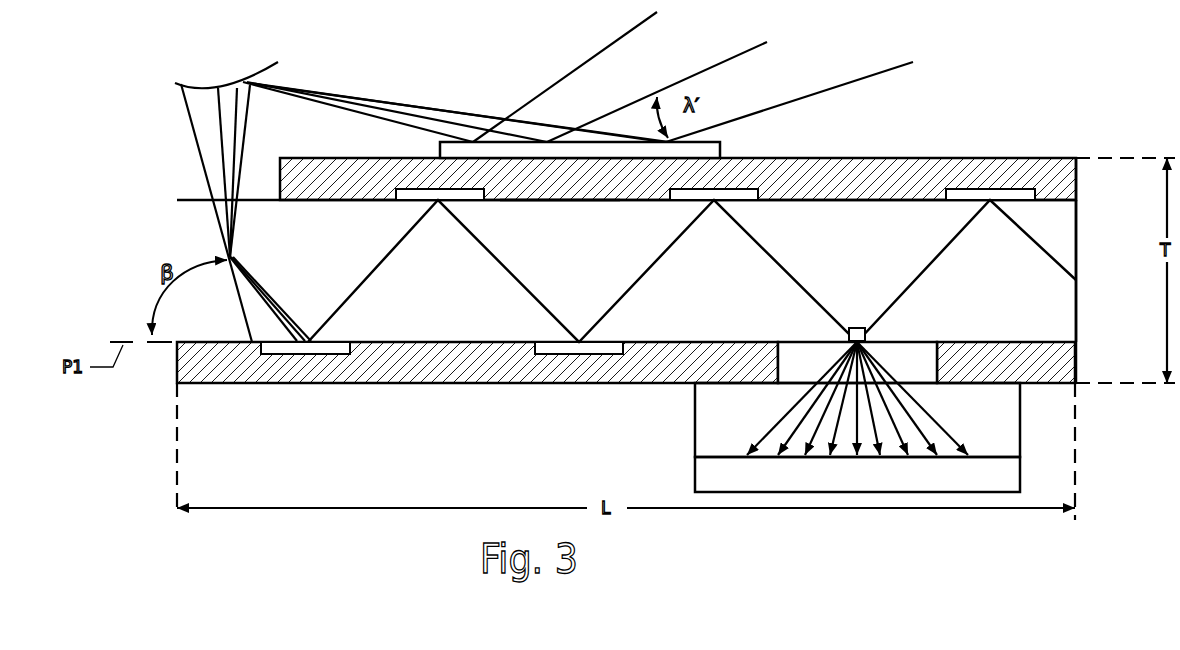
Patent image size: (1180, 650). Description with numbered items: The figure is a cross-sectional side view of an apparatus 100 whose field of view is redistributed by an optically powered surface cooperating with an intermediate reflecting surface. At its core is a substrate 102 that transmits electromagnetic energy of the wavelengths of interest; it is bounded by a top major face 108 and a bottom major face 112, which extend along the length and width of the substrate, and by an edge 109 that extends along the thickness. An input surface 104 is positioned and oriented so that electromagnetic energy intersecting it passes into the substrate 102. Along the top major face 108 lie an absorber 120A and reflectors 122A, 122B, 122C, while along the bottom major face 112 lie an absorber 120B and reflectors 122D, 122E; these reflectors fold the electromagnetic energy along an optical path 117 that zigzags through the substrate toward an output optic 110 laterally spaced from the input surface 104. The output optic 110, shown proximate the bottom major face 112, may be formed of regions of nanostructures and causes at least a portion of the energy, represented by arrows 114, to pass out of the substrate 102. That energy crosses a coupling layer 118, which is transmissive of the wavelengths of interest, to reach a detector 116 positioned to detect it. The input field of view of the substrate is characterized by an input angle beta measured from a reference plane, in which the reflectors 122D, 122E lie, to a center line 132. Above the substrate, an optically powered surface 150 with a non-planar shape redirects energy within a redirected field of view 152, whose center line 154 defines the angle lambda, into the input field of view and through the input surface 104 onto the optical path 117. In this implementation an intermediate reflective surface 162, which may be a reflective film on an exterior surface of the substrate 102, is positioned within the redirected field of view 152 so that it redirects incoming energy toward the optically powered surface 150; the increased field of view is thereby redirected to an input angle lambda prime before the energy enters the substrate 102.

The apparatus 100 is at (977, 98).
The substrate 102 is at (1052, 234).
The input surface 104 is at (270, 201).
The top major face 108 is at (555, 201).
The edge 109 is at (1078, 314).
The output optic 110 is at (857, 328).
The bottom major face 112 is at (992, 342).
The arrows 114 is at (942, 420).
The detector 116 is at (695, 474).
The optical path 117 is at (377, 272).
The coupling layer 118 is at (695, 419).
The absorber 120A is at (895, 158).
The absorber 120B is at (245, 384).
The reflector 122A is at (437, 190).
The reflector 122B is at (743, 158).
The reflector 122C is at (990, 188).
The reflector 122D is at (307, 355).
The reflector 122E is at (577, 357).
The center line 132 is at (235, 228).
The optically powered surface 150 is at (192, 89).
The redirected field of view 152 is at (477, 125).
The center line 154 is at (457, 125).
The intermediate reflective surface 162 is at (720, 157).